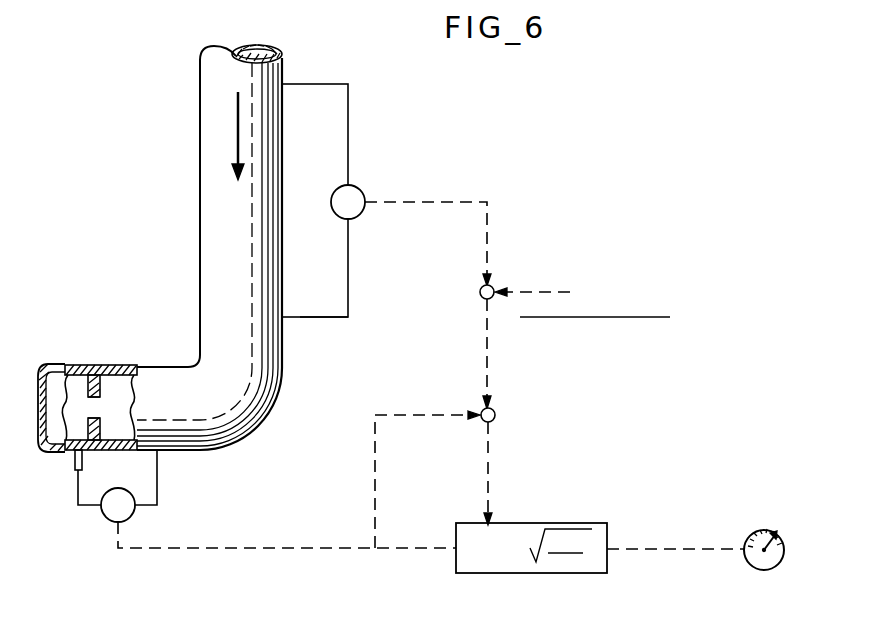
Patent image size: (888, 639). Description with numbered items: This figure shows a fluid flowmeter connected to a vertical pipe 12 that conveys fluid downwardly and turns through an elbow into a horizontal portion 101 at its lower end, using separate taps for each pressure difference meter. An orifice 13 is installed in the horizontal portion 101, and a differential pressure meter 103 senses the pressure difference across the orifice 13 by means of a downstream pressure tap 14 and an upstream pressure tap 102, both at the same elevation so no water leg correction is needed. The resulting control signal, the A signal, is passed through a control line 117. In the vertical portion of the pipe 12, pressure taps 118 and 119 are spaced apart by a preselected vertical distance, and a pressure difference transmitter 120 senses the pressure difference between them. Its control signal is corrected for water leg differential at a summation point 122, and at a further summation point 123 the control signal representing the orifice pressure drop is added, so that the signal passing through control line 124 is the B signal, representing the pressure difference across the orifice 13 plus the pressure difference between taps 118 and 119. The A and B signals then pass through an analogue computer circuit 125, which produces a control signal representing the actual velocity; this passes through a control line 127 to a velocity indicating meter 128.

The vertical pipe 12 is at (200, 92).
The orifice 13 is at (117, 373).
The pressure tap 14 is at (72, 462).
The horizontal portion 101 is at (61, 371).
The pressure tap 102 is at (158, 479).
The differential pressure meter 103 is at (108, 519).
The control line 117 is at (248, 550).
The pressure tap 118 is at (325, 83).
The pressure tap 119 is at (320, 318).
The pressure difference transmitter 120 is at (365, 190).
The summation point 122 is at (491, 286).
The summation point 123 is at (499, 413).
The control line 124 is at (490, 461).
The analogue computer circuit 125 is at (547, 527).
The control line 127 is at (661, 553).
The velocity indicating meter 128 is at (769, 531).
The A signal A is at (157, 550).
The B signal B is at (492, 484).